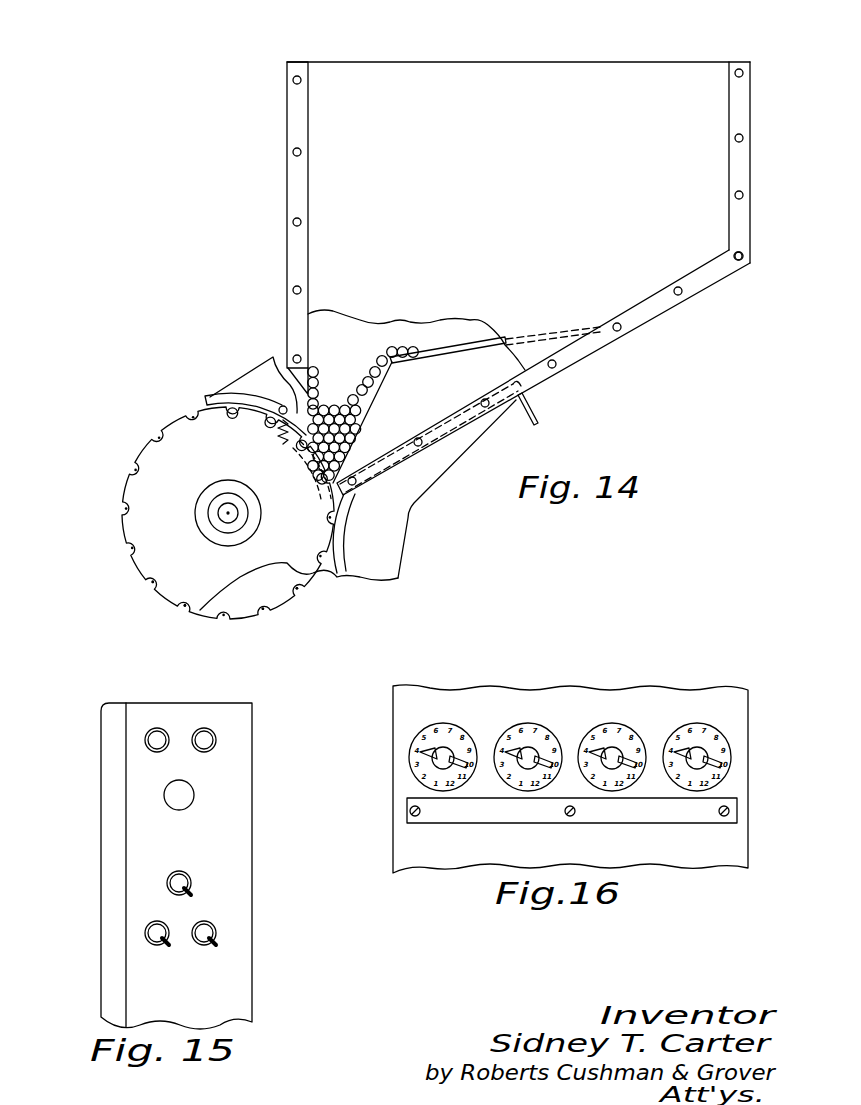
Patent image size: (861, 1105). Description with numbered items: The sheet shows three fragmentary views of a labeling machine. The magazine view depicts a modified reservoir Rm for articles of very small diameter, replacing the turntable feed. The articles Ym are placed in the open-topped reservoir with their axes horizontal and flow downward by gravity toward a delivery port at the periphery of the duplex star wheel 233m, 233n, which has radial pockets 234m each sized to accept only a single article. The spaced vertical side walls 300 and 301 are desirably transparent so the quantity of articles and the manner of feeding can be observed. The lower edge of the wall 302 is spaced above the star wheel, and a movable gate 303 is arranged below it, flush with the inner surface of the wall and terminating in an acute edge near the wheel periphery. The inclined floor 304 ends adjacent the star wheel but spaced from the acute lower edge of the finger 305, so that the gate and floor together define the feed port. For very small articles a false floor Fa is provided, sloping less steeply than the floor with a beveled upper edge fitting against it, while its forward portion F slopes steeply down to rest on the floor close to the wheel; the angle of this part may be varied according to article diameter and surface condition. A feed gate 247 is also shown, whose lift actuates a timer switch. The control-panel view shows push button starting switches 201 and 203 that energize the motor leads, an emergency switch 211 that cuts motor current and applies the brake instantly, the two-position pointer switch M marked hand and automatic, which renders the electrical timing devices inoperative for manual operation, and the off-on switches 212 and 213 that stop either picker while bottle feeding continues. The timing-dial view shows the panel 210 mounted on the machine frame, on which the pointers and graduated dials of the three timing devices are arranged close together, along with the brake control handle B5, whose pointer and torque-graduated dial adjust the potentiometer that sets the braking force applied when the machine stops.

In FIG. 14, the side wall 300 is at (320, 243).
In FIG. 14, the side wall 301 is at (330, 333).
In FIG. 14, the wall 302 is at (316, 202).
In FIG. 14, the movable gate 303 is at (734, 82).
In FIG. 14, the inclined floor 304 is at (648, 297).
In FIG. 14, the finger 305 is at (302, 392).
In FIG. 14, the feed gate 247 is at (266, 366).
In FIG. 14, the radial pockets 234m is at (132, 547).
In FIG. 14, the duplex star wheel 233n is at (185, 578).
In FIG. 14, the duplex star wheel 233m is at (275, 590).
In FIG. 14, the reservoir Rm is at (660, 48).
In FIG. 14, the articles Ym is at (412, 347).
In FIG. 14, the false floor Fa is at (495, 330).
In FIG. 14, the forward portion of false floor F is at (363, 422).
In FIG. 15, the push button starting switch 201 is at (145, 740).
In FIG. 15, the push button starting switch 203 is at (213, 740).
In FIG. 15, the emergency switch 211 is at (195, 795).
In FIG. 15, the two-position pointer switch M is at (216, 886).
In FIG. 15, the push button switch 212 is at (145, 935).
In FIG. 15, the push button switch 213 is at (215, 935).
In FIG. 16, the panel 210 is at (630, 703).
In FIG. 16, the brake control handle B5 is at (697, 750).